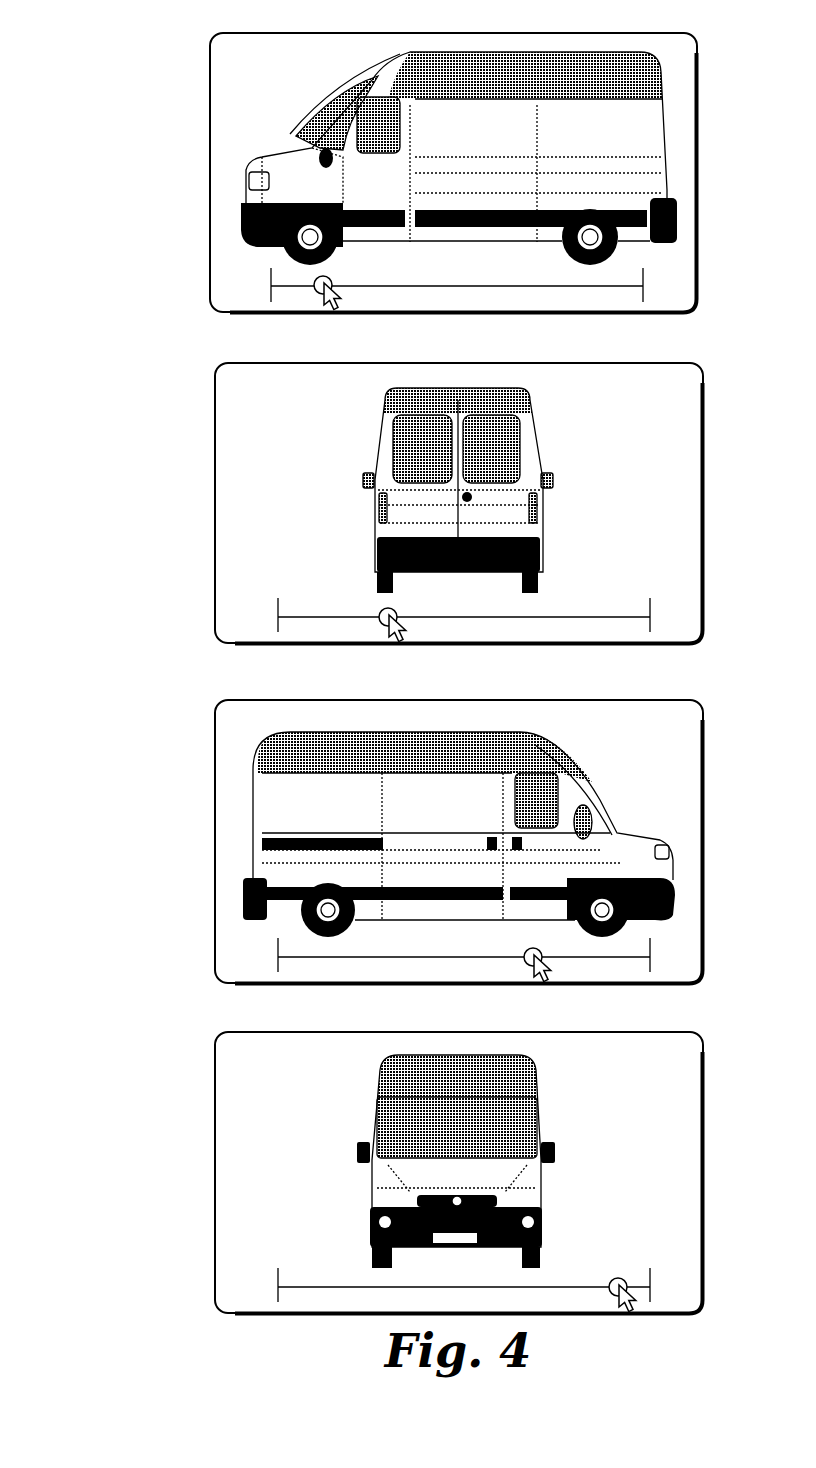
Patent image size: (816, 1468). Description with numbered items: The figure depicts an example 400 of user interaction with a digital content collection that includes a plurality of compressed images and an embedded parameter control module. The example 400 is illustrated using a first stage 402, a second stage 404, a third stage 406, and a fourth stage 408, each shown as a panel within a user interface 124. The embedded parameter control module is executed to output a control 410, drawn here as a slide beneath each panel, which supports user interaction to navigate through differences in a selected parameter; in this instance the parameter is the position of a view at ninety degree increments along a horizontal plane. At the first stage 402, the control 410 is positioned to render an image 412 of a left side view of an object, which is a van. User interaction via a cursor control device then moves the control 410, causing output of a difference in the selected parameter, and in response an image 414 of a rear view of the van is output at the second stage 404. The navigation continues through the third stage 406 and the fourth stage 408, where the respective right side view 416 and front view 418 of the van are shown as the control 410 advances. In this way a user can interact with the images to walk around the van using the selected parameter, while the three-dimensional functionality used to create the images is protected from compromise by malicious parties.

The example 400 is at (146, 70).
The first stage 402 is at (187, 145).
The second stage 404 is at (187, 488).
The third stage 406 is at (187, 820).
The fourth stage 408 is at (187, 1152).
The control 410 is at (417, 285).
The image 412 is at (335, 106).
The image 414 is at (375, 461).
The right side view 416 is at (589, 793).
The front view 418 is at (539, 1119).
The user interface 124 is at (699, 163).